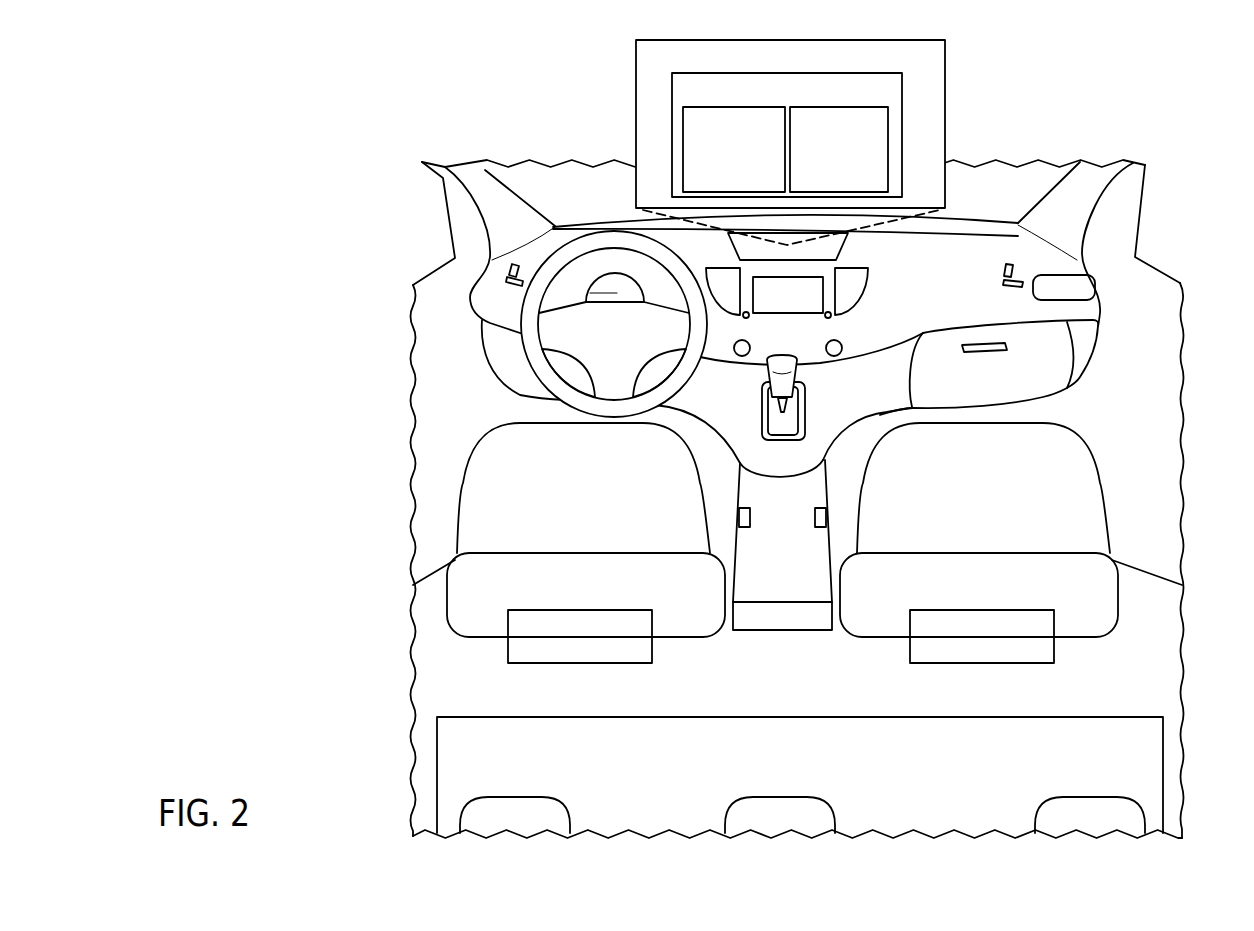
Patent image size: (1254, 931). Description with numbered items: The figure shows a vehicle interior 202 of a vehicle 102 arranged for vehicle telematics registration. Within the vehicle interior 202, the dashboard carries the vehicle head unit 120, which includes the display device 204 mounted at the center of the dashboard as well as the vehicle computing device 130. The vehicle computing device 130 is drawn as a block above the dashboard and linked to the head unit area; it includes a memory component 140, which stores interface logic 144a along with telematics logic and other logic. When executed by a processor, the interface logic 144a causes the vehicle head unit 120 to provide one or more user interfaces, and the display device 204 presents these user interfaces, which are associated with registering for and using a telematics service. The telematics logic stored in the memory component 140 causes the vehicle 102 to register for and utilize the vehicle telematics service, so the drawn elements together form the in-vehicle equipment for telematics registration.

The vehicle 102 is at (1190, 139).
The vehicle interior 202 is at (431, 333).
The display device 204 is at (825, 293).
The vehicle head unit 120 is at (802, 323).
The vehicle computing device 130 is at (940, 66).
The memory component 140 is at (890, 98).
The interface logic 144a is at (758, 185).